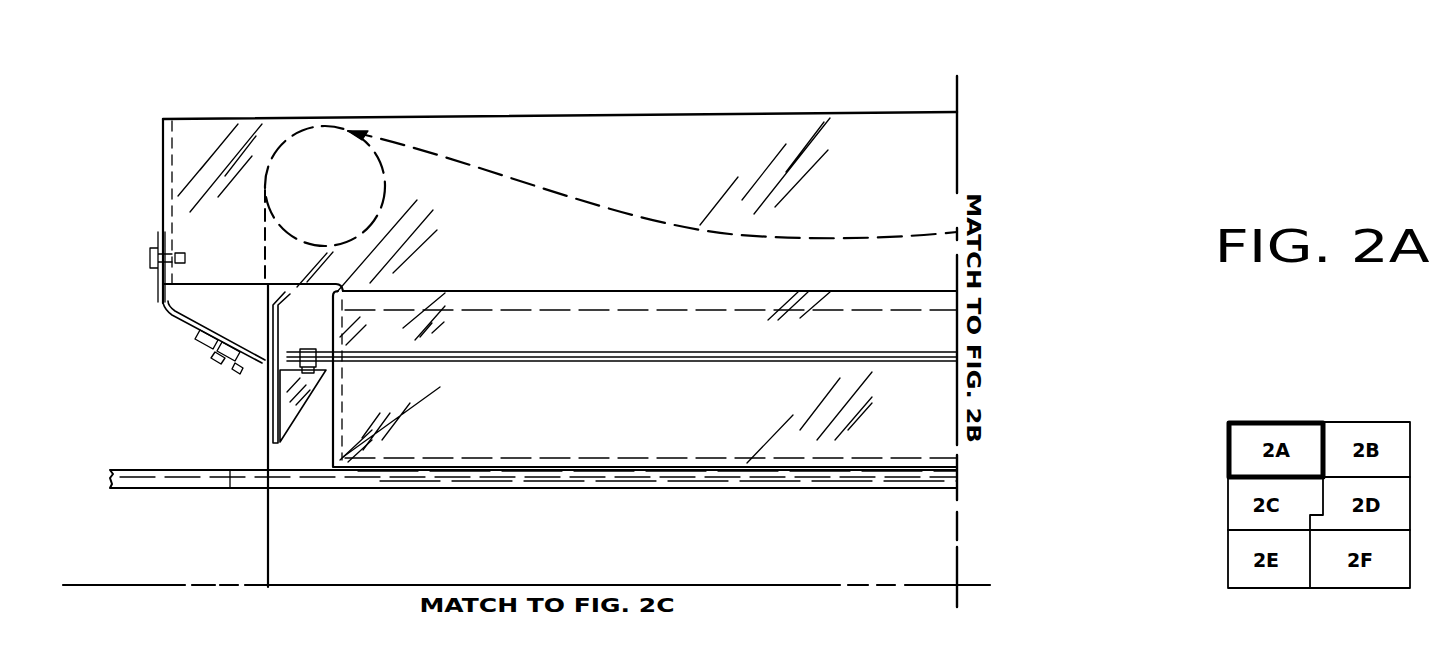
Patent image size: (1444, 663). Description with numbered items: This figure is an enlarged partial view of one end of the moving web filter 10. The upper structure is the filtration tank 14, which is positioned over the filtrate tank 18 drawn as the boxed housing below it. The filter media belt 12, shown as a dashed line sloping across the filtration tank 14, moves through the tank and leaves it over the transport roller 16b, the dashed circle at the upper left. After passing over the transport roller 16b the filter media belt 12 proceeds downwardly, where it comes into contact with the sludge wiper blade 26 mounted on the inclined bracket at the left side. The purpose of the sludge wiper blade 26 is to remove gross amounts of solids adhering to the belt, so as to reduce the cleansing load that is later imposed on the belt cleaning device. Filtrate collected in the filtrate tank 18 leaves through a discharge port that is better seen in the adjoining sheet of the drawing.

The moving web filter 10 is at (779, 78).
The filter media belt 12 is at (496, 166).
The filtration tank 14 is at (638, 148).
The transport roller 16b is at (295, 135).
The filtrate tank 18 is at (688, 416).
The sludge wiper blade 26 is at (262, 363).